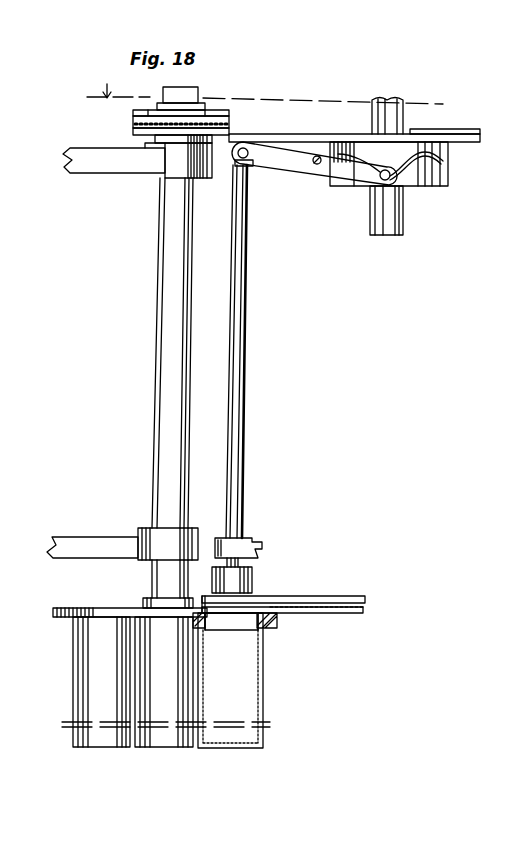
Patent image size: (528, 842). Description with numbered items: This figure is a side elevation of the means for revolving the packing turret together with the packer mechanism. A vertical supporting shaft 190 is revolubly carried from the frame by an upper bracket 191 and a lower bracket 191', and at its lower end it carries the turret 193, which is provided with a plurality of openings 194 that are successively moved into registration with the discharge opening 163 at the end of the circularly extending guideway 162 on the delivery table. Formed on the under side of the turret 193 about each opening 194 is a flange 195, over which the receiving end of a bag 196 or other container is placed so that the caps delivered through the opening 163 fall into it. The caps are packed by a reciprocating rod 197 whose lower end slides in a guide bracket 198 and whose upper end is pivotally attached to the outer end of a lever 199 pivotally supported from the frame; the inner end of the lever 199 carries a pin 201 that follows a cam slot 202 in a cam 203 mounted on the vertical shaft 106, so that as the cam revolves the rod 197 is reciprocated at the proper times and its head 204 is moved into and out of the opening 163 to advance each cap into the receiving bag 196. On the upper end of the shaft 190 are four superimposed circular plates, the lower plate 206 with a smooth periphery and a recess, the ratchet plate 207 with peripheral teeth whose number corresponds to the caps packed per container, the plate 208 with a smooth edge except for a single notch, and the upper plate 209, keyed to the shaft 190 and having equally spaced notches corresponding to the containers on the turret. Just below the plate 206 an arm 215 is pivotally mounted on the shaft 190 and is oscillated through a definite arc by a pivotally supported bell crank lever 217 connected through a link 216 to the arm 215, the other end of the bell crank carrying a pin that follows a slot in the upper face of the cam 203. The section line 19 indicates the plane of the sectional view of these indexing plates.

The section line 19- 19 is at (267, 98).
The upper plate 209 is at (218, 110).
The plate 208 is at (229, 121).
The ratchet plate 207 is at (133, 125).
The lower plate 206 is at (133, 132).
The arm 215 is at (213, 143).
The bracket 191 is at (114, 176).
The supporting shaft 190 is at (156, 346).
The reciprocating rod 197 is at (233, 408).
The lever 199 is at (298, 168).
The bell crank lever 217 is at (318, 138).
The link 216 is at (462, 131).
The cam 203 is at (448, 179).
The cam slot 202 is at (443, 158).
The pin 201 is at (403, 188).
The vertical shaft 106 is at (403, 225).
The bracket 191' is at (122, 558).
The guide bracket 198 is at (247, 545).
The head 204 is at (252, 577).
The discharge opening 163 is at (246, 606).
The guideway 162 is at (318, 614).
The turret 193 is at (101, 608).
The bag 196 is at (82, 672).
The flange 195 is at (204, 632).
The opening 194 is at (233, 618).